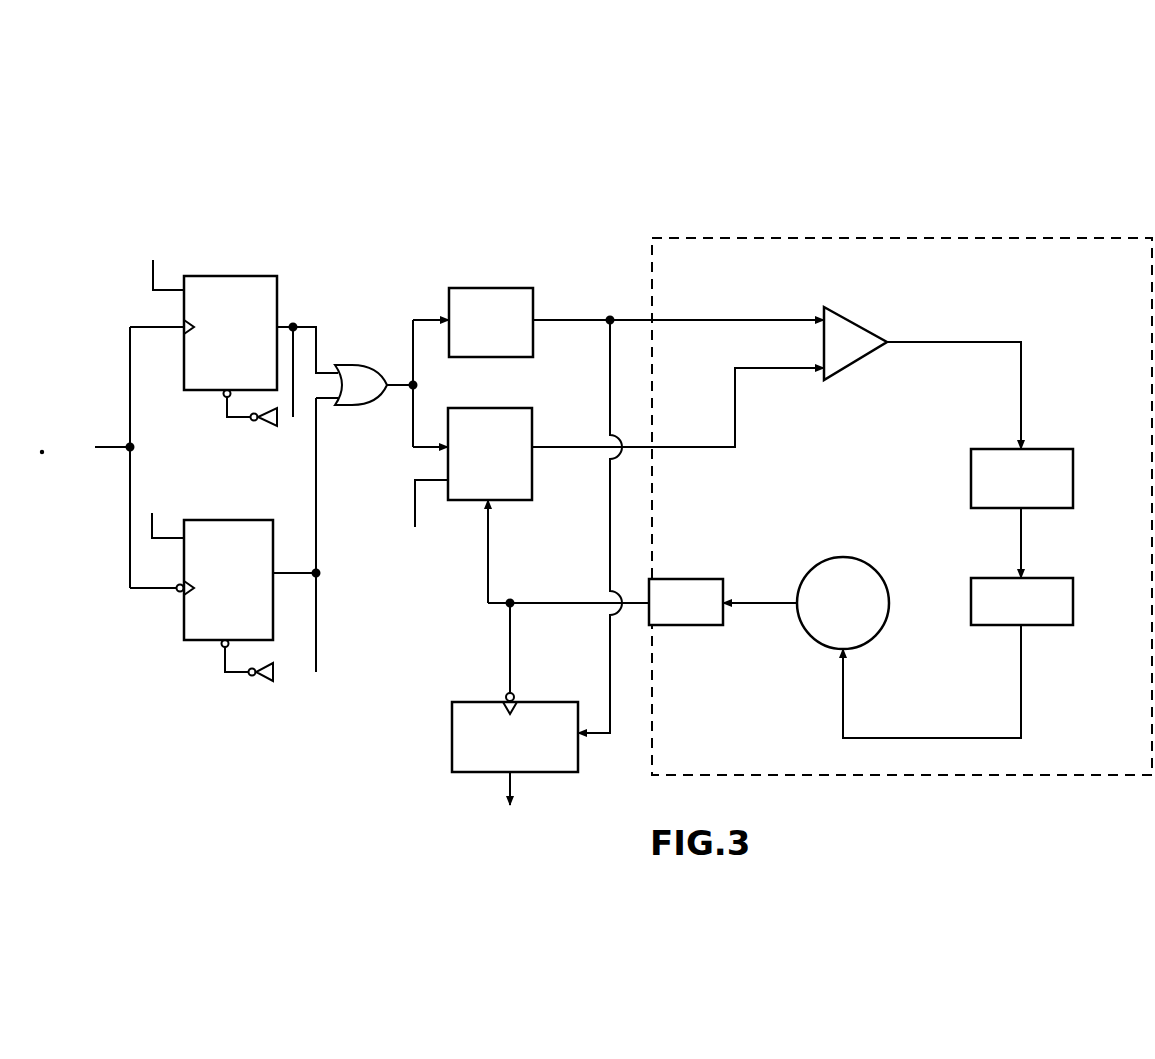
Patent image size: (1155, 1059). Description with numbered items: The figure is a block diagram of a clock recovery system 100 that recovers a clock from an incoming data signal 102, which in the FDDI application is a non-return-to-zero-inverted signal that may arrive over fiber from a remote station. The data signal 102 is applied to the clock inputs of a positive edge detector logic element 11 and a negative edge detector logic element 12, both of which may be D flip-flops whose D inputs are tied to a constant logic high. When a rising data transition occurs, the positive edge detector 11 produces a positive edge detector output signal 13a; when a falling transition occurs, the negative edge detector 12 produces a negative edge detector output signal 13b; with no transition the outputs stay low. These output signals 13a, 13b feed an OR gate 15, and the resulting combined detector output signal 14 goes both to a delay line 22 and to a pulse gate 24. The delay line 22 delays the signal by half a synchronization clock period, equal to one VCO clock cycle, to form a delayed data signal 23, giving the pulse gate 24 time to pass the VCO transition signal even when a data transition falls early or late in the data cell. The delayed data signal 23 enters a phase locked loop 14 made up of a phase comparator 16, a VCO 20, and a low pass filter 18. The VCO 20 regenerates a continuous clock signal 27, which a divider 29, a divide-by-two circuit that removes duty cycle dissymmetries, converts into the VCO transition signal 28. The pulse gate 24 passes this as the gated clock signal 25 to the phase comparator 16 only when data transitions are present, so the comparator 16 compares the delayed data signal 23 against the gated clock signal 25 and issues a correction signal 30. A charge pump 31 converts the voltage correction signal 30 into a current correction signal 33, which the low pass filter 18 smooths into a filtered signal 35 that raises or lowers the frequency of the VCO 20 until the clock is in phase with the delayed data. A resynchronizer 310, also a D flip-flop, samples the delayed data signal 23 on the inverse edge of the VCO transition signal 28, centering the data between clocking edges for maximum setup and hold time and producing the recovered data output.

The positive edge detector logic element 11 is at (232, 276).
The negative edge detector logic element 12 is at (210, 520).
The positive edge detector output signal 13a is at (293, 323).
The negative edge detector output signal 13b is at (316, 540).
The combined detector output signal 14 is at (420, 320).
The OR gate 15 is at (358, 366).
The phase comparator 16 is at (858, 326).
The low pass filter 18 is at (1075, 595).
The VCO 20 is at (870, 560).
The delay line 22 is at (498, 288).
The delayed data signal 23 is at (623, 318).
The pulse gate 24 is at (536, 420).
The gated clock signal 25 is at (683, 448).
The continuous clock signal 27 is at (765, 600).
The VCO transition signal 28 is at (490, 560).
The divider 29 is at (688, 579).
The correction signal 30 is at (1023, 370).
The charge pump 31 is at (1060, 449).
The current correction signal 33 is at (1023, 548).
The filtered signal 35 is at (1023, 672).
The clock recovery system 100 is at (333, 718).
The data signal 102 is at (130, 382).
The resynchronizer 310 is at (452, 727).